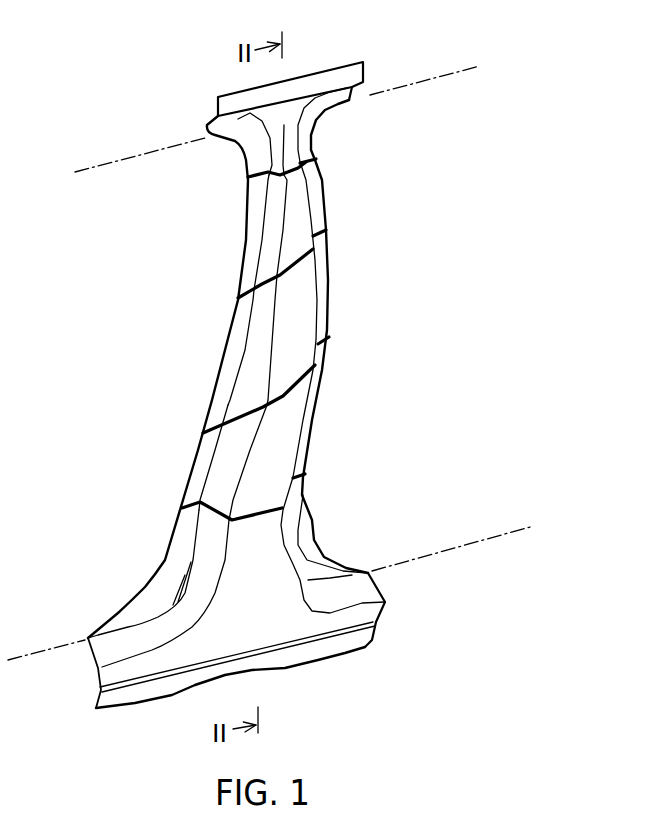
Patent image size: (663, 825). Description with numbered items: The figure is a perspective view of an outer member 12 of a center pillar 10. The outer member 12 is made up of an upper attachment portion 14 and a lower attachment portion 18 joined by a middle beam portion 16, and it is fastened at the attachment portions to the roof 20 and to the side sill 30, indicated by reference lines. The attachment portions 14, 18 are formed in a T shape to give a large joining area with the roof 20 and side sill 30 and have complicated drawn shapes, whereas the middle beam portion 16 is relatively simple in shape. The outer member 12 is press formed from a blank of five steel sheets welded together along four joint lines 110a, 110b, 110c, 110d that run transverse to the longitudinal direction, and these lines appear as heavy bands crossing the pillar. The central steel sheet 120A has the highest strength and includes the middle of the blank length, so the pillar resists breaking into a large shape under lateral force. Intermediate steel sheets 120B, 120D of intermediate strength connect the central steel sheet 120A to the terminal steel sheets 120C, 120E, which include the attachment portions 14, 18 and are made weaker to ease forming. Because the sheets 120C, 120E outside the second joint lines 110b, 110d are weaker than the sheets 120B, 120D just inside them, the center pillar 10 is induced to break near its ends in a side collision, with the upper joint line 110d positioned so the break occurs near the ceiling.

The center pillar 10 is at (488, 268).
The outer member 12 is at (350, 337).
The upper attachment portion 14 is at (283, 118).
The middle beam portion 16 is at (215, 393).
The lower attachment portion 18 is at (272, 610).
The roof 20 is at (418, 82).
The side sill 30 is at (460, 546).
The joint line 110a is at (292, 386).
The joint line 110b is at (260, 518).
The joint line 110c is at (298, 262).
The joint line 110d is at (305, 182).
The central steel sheet 120A is at (265, 347).
The intermediate steel sheet 120B is at (223, 468).
The terminal steel sheet 120C is at (142, 638).
The intermediate steel sheet 120D is at (275, 237).
The terminal steel sheet 120E is at (245, 138).